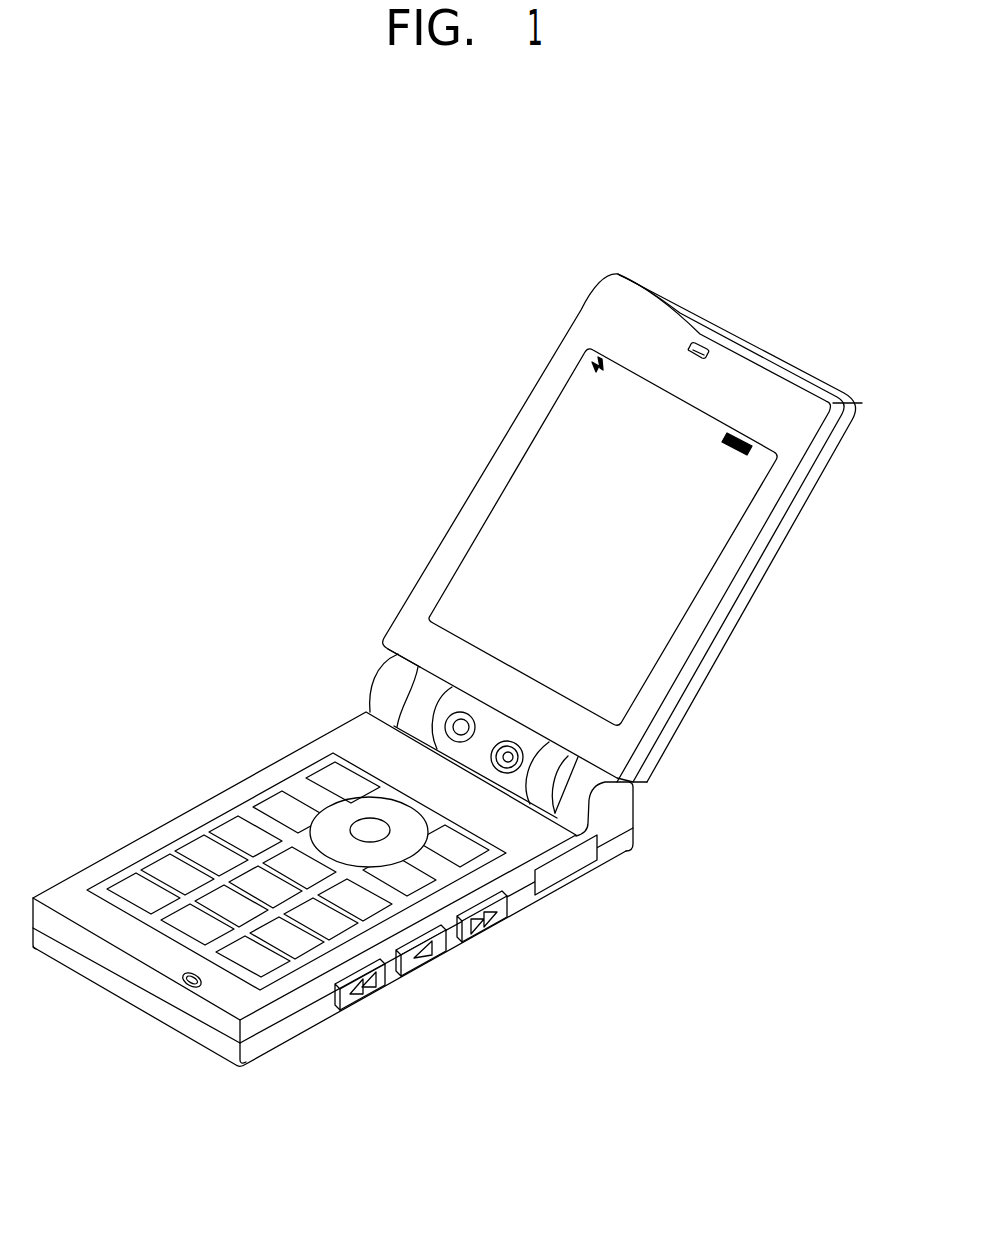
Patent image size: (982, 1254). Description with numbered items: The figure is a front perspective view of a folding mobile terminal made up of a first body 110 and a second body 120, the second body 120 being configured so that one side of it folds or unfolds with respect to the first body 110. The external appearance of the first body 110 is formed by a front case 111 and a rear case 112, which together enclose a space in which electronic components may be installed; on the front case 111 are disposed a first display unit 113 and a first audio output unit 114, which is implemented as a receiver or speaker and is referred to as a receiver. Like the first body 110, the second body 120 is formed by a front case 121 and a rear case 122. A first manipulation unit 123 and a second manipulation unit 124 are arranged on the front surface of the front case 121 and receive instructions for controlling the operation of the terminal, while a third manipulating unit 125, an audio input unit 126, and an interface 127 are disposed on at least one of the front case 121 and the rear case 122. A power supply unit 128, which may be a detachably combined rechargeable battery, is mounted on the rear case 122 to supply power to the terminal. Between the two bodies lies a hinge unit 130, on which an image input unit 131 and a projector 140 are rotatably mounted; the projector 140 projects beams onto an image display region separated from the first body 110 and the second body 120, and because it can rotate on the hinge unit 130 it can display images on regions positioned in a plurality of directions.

The first body 110 is at (445, 470).
The front case 111 is at (760, 552).
The rear case 112 is at (730, 623).
The first display unit 113 is at (530, 460).
The first audio output unit 114 is at (703, 347).
The second body 120 is at (150, 811).
The front case 121 is at (623, 807).
The rear case 122 is at (623, 843).
The first manipulation unit 123 is at (323, 773).
The second manipulation unit 124 is at (237, 828).
The third manipulating unit 125 is at (433, 950).
The audio input unit 126 is at (187, 984).
The interface 127 is at (567, 870).
The power supply unit 128 is at (310, 1030).
The hinge unit 130 is at (387, 685).
The image input unit 131 is at (460, 723).
The projector 140 is at (505, 757).